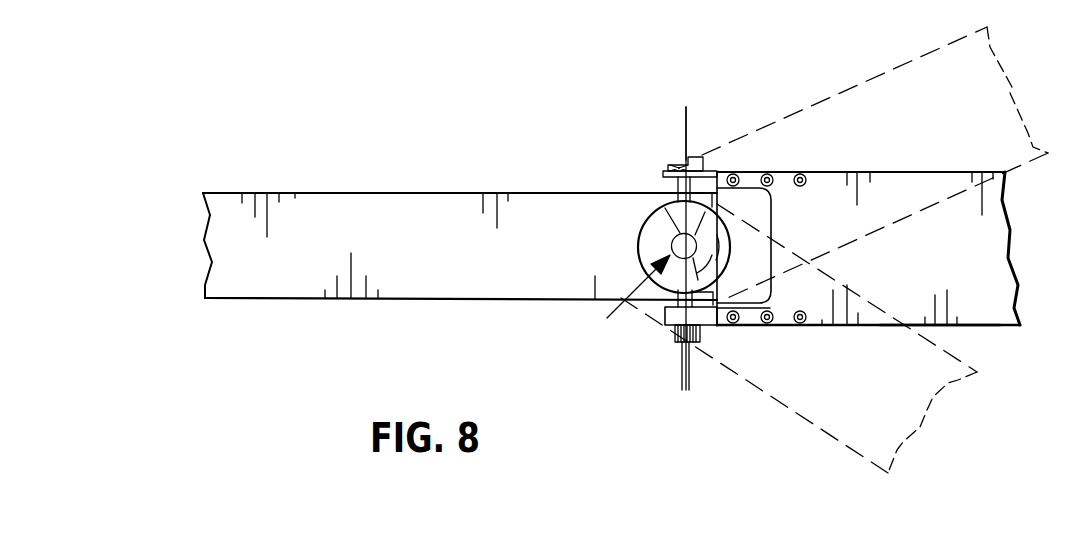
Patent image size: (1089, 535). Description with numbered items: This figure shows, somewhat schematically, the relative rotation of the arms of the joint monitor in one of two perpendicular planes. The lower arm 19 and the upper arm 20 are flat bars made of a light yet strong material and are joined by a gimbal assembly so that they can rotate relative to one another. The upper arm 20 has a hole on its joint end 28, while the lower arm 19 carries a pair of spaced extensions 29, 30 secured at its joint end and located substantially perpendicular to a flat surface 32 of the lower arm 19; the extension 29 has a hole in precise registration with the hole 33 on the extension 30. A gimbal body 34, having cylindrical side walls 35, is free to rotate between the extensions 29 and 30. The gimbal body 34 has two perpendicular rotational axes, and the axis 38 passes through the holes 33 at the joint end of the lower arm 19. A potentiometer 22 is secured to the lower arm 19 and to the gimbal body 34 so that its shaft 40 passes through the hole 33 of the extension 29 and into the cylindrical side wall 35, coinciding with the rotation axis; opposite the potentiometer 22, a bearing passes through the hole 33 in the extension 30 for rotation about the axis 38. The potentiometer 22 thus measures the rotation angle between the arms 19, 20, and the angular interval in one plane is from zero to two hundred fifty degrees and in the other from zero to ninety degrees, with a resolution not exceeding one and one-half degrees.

The lower arm 19 is at (988, 231).
The upper arm 20 is at (262, 286).
The potentiometer 22 is at (677, 165).
The joint end 28 is at (717, 328).
The extension 29 is at (662, 176).
The extension 30 is at (665, 320).
The flat surface 32 is at (963, 286).
The hole 33 is at (680, 162).
The gimbal body 34 is at (621, 302).
The cylindrical side walls 35 is at (636, 243).
The rotational axis 38 is at (687, 150).
The shaft 40 is at (712, 172).